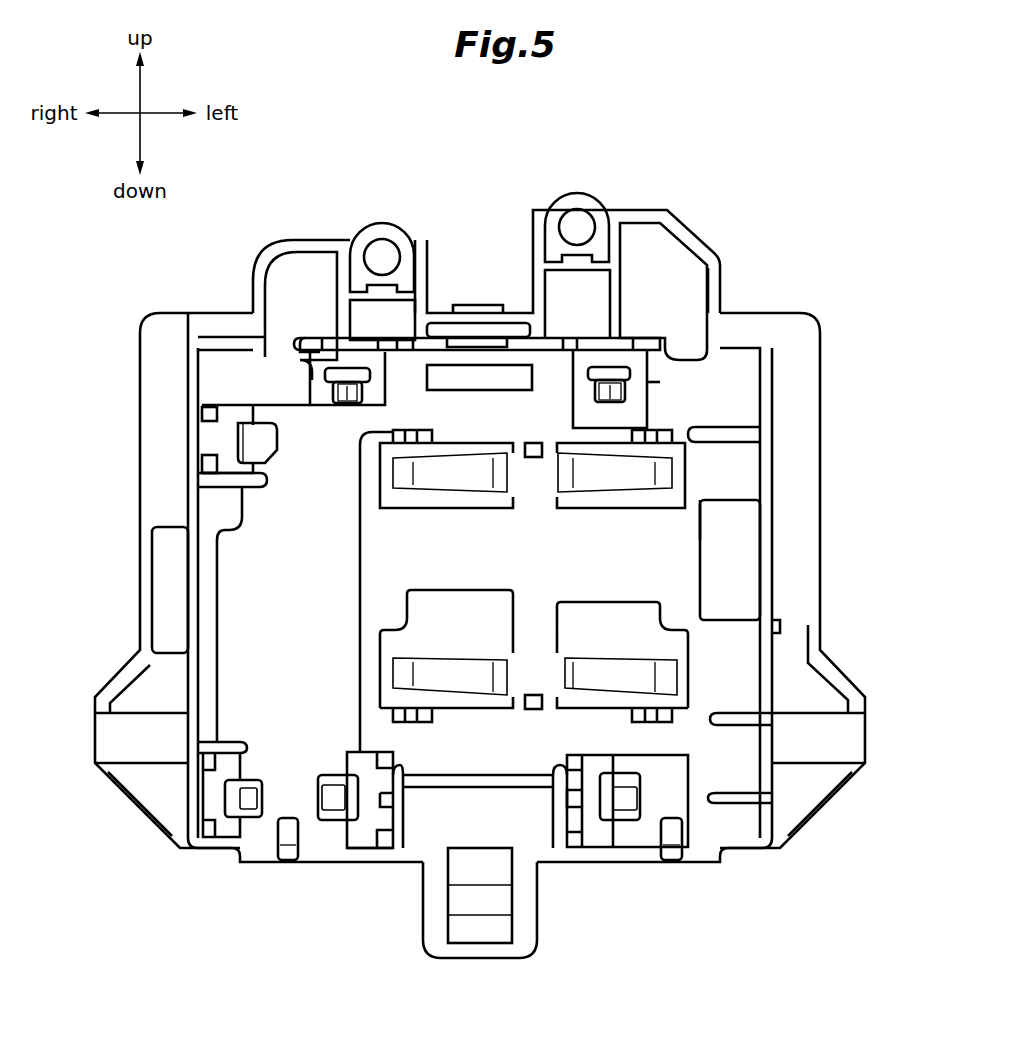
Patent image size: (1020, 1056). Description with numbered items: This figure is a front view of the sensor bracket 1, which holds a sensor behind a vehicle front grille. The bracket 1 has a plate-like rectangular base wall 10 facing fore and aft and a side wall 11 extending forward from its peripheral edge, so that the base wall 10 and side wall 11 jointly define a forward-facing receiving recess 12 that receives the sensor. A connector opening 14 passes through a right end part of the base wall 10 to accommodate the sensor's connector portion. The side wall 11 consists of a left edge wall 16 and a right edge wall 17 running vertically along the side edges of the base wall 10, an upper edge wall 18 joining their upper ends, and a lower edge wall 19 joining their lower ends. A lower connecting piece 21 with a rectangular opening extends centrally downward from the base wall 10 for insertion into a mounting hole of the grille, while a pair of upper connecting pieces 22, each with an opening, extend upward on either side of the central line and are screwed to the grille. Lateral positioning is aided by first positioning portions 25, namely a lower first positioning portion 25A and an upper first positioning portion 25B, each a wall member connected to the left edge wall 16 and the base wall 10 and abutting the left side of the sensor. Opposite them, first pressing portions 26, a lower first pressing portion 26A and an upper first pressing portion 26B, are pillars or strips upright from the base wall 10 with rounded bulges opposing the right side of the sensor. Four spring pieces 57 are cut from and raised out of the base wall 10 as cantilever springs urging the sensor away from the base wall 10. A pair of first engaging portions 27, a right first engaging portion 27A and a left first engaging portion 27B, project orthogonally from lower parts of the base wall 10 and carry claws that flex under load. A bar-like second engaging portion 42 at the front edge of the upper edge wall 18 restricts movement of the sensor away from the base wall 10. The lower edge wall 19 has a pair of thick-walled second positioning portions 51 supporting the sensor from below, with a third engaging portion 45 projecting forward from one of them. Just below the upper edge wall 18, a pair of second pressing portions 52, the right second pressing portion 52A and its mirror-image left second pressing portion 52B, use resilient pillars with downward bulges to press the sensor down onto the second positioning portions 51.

The sensor bracket 1 is at (133, 292).
The base wall 10 is at (681, 541).
The side wall 11 is at (778, 480).
The receiving recess 12 is at (683, 580).
The connector opening 14 is at (360, 555).
The left edge wall 16 is at (772, 625).
The right edge wall 17 is at (198, 503).
The upper edge wall 18 is at (330, 343).
The lower edge wall 19 is at (375, 850).
The lower connecting piece 21 is at (480, 950).
The upper connecting pieces 22 is at (385, 228).
The first positioning portions 25 is at (717, 810).
The lower first positioning portion 25A is at (740, 800).
The upper first positioning portion 25B is at (727, 432).
The first pressing portions 26 is at (226, 797).
The lower first pressing portion 26A is at (237, 812).
The upper first pressing portion 26B is at (253, 440).
The first engaging portions 27 is at (332, 829).
The right first engaging portion 27A is at (333, 775).
The left first engaging portion 27B is at (625, 815).
The second engaging portion 42 is at (478, 355).
The third engaging portion 45 is at (288, 830).
The second positioning portions 51 is at (283, 866).
The second pressing portions 52 is at (338, 400).
The right second pressing portion 52A is at (352, 400).
The left second pressing portion 52B is at (625, 402).
The spring pieces 57 is at (437, 480).